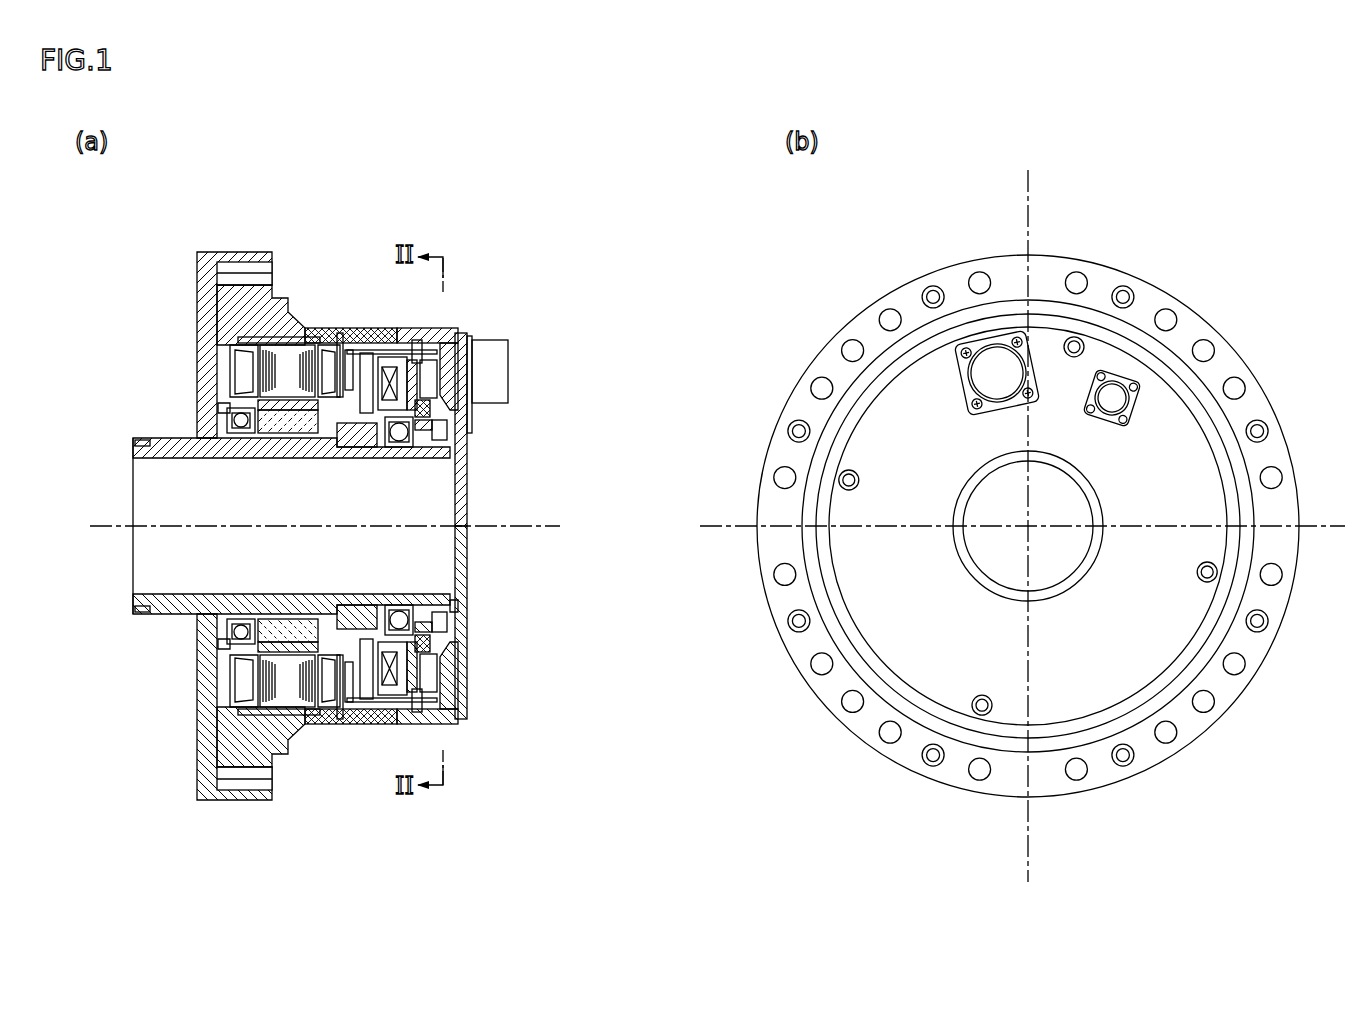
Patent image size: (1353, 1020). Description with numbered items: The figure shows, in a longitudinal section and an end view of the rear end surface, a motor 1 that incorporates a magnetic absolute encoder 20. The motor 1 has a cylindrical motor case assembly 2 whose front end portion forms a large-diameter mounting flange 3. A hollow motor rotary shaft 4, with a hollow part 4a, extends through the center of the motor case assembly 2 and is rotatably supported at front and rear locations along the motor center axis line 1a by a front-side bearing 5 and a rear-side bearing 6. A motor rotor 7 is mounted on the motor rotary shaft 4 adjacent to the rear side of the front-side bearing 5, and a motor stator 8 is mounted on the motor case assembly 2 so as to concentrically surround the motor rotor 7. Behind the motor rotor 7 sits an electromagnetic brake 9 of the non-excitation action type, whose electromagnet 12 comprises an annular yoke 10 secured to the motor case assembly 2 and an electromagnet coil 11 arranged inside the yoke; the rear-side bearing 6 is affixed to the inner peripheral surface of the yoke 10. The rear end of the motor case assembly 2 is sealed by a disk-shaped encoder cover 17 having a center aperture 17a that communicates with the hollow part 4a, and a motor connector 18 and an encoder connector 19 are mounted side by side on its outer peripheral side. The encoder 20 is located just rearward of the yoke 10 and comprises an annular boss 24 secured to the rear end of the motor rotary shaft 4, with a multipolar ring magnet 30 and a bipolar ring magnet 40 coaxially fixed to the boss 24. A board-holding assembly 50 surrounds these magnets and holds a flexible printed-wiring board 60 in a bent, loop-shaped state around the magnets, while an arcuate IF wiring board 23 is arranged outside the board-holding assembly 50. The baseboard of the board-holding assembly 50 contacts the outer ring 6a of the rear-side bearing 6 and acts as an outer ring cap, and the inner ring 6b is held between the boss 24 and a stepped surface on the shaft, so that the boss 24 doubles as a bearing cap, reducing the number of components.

The motor 1 is at (157, 336).
The motor center axis line 1a is at (165, 522).
The motor case assembly 2 is at (301, 322).
The mounting flange 3 is at (230, 322).
The motor rotary shaft 4 is at (170, 610).
The hollow part 4a is at (305, 574).
The front-side bearing 5 is at (235, 628).
The rear-side bearing 6 is at (407, 582).
The outer ring 6a is at (402, 603).
The inner ring 6b is at (395, 622).
The motor rotor 7 is at (275, 648).
The motor stator 8 is at (288, 687).
The electromagnetic brake 9 is at (355, 667).
The annular yoke 10 is at (400, 650).
The electromagnet coil 11 is at (378, 640).
The electromagnet 12 is at (366, 753).
The encoder cover 17 is at (466, 637).
The center aperture 17a is at (458, 596).
The motor connector 18 is at (490, 353).
The encoder connector 19 is at (1115, 400).
The magnetic absolute encoder 20 is at (444, 650).
The IF wiring board 23 is at (444, 682).
The annular boss 24 is at (443, 600).
The multipolar ring magnet 30 is at (436, 418).
The bipolar ring magnet 40 is at (441, 432).
The board-holding assembly 50 is at (448, 392).
The flexible printed-wiring board 60 is at (434, 410).